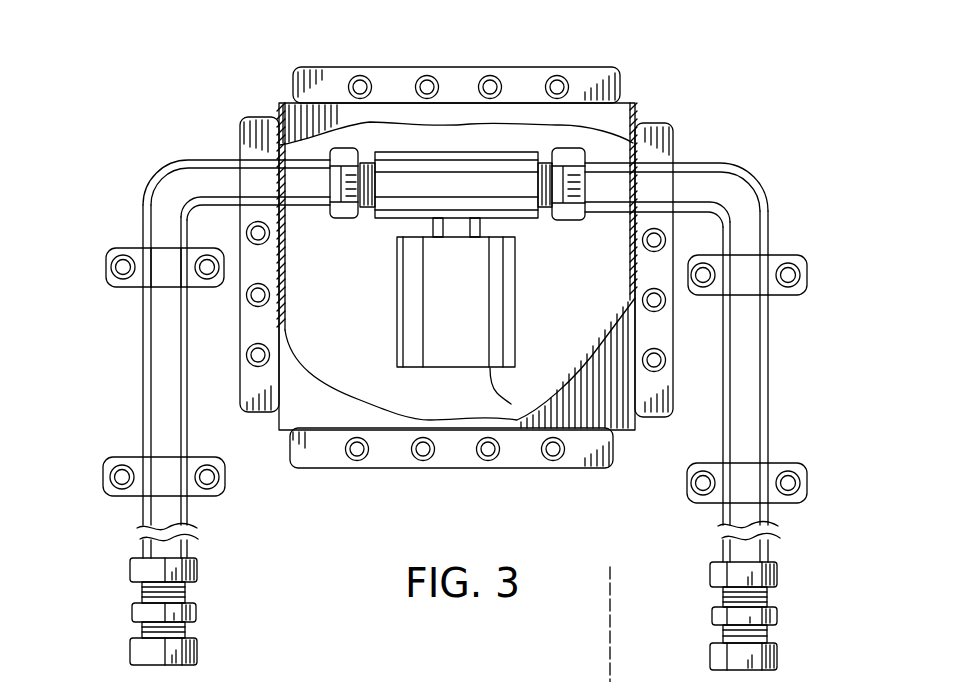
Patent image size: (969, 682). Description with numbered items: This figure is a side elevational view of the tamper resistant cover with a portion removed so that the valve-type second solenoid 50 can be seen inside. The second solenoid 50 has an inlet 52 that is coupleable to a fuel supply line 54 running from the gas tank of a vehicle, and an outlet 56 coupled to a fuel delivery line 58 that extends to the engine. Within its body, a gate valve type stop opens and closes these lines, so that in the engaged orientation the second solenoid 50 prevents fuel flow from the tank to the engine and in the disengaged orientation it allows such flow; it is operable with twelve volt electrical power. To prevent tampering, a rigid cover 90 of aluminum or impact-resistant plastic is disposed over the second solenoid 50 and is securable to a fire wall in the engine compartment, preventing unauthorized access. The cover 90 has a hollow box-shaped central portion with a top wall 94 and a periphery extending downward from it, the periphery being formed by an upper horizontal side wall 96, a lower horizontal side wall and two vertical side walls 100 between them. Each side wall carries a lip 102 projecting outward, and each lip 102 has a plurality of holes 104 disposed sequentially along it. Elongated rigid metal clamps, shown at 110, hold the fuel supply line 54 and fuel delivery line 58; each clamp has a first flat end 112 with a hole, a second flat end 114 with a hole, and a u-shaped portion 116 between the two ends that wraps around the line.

The second solenoid 50 is at (500, 320).
The inlet 52 is at (373, 150).
The fuel supply line 54 is at (160, 387).
The outlet 56 is at (548, 150).
The fuel delivery line 58 is at (748, 398).
The rigid cover 90 is at (318, 410).
The top wall 94 is at (623, 117).
The upper horizontal side wall 96 is at (514, 624).
The vertical side walls 100 is at (277, 263).
The lip 102 is at (527, 82).
The holes 104 is at (437, 82).
The pipe clamp 110 is at (107, 250).
The first flat end 112 is at (115, 287).
The second flat end 114 is at (232, 313).
The u-shaped portion 116 is at (170, 263).